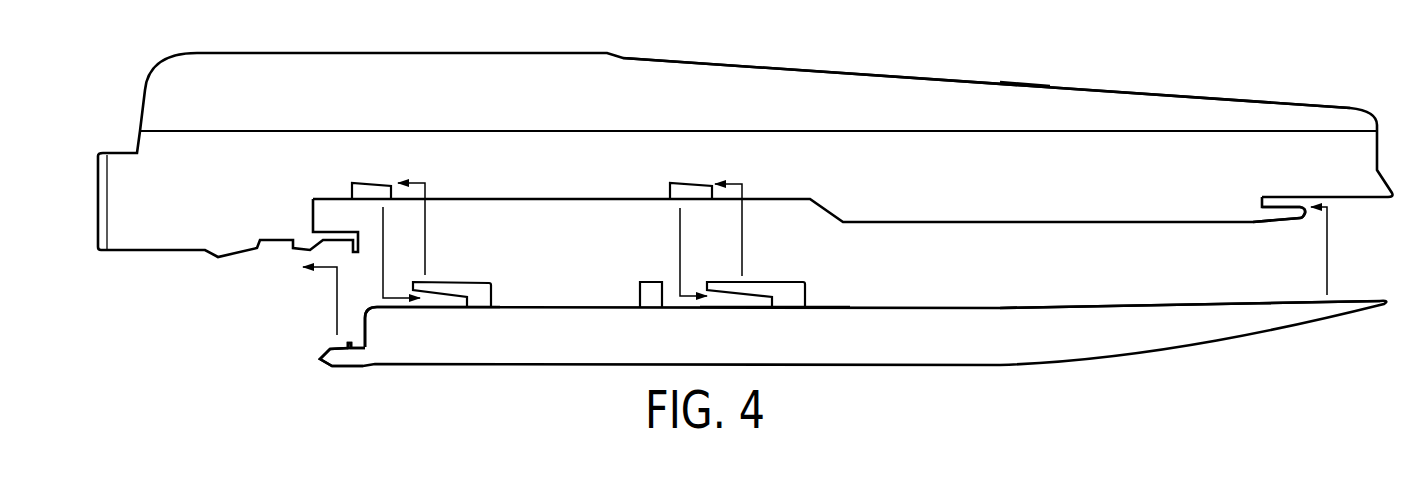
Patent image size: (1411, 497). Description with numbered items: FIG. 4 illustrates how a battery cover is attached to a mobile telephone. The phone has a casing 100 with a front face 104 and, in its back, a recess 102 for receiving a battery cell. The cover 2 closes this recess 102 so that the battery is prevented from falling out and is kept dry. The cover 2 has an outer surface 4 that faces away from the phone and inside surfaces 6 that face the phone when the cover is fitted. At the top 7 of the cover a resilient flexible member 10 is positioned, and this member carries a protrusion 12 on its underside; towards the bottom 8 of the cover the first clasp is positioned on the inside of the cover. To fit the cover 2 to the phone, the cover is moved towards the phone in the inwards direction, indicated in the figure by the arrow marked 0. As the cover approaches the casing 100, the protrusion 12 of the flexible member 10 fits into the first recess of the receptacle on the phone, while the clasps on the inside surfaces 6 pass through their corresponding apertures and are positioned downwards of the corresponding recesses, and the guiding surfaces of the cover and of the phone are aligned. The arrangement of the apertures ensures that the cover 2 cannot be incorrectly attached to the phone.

The casing 100 is at (317, 109).
The recess 102 is at (560, 244).
The front face 104 is at (722, 59).
The cover 2 is at (768, 348).
The outer surface 4 is at (988, 373).
The inside surfaces 6 is at (1022, 305).
The top 7 is at (403, 350).
The bottom 8 is at (1302, 317).
The resilient flexible member 10 is at (329, 372).
The protrusion 12 is at (343, 345).
The reference direction 0 is at (1023, 0).